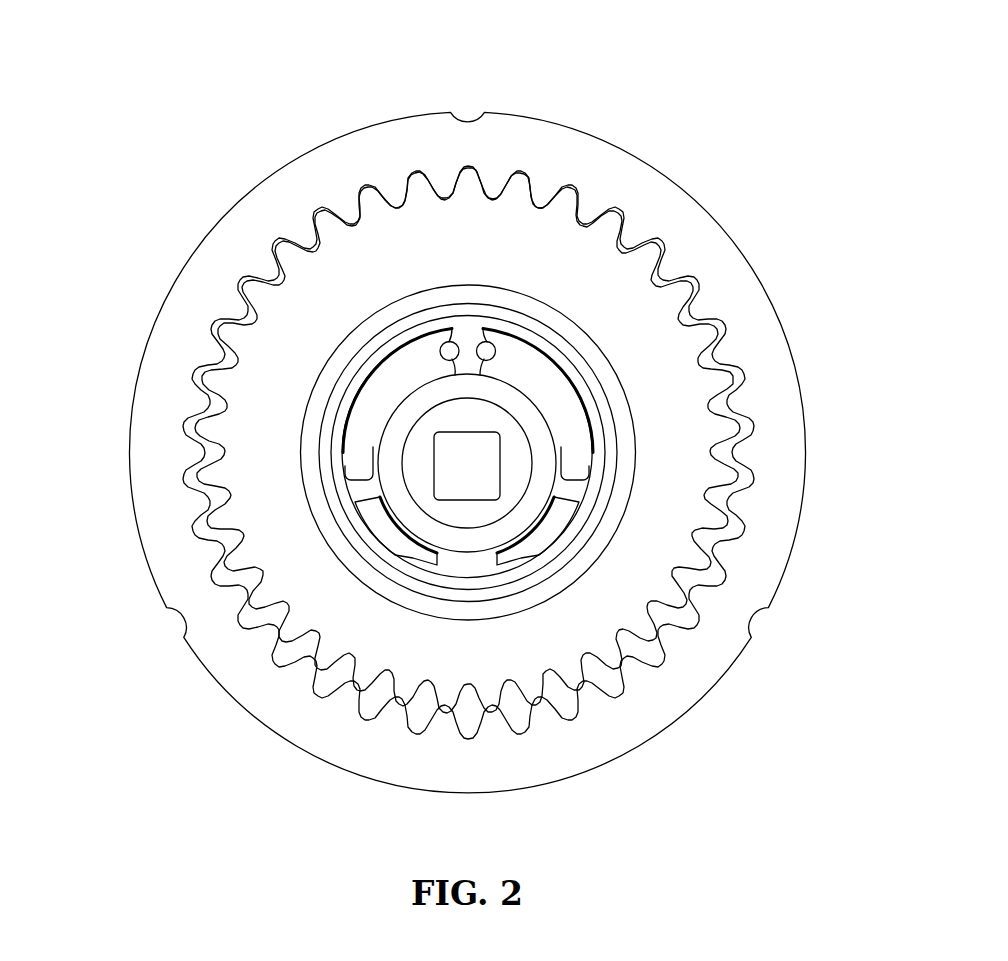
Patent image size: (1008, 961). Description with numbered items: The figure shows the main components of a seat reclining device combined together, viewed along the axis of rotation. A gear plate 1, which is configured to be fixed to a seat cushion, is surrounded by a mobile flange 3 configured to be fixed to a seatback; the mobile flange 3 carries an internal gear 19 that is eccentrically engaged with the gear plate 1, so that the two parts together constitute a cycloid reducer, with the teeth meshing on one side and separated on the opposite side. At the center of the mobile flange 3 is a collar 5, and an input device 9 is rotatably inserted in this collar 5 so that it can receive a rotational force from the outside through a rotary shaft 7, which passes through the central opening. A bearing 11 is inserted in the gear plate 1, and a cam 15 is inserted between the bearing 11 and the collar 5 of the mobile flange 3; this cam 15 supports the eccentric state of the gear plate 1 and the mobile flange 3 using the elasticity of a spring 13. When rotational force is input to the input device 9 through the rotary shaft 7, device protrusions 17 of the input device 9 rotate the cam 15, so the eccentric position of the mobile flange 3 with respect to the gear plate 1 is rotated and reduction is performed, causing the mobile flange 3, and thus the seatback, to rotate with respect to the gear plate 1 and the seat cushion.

The gear plate 1 is at (682, 486).
The mobile flange 3 is at (153, 460).
The collar 5 is at (391, 445).
The rotary shaft 7 is at (468, 480).
The input device 9 is at (420, 483).
The bearing 11 is at (586, 508).
The spring 13 is at (450, 349).
The cam 15 is at (382, 387).
The device protrusions 17 is at (547, 533).
The internal gear 19 is at (493, 180).